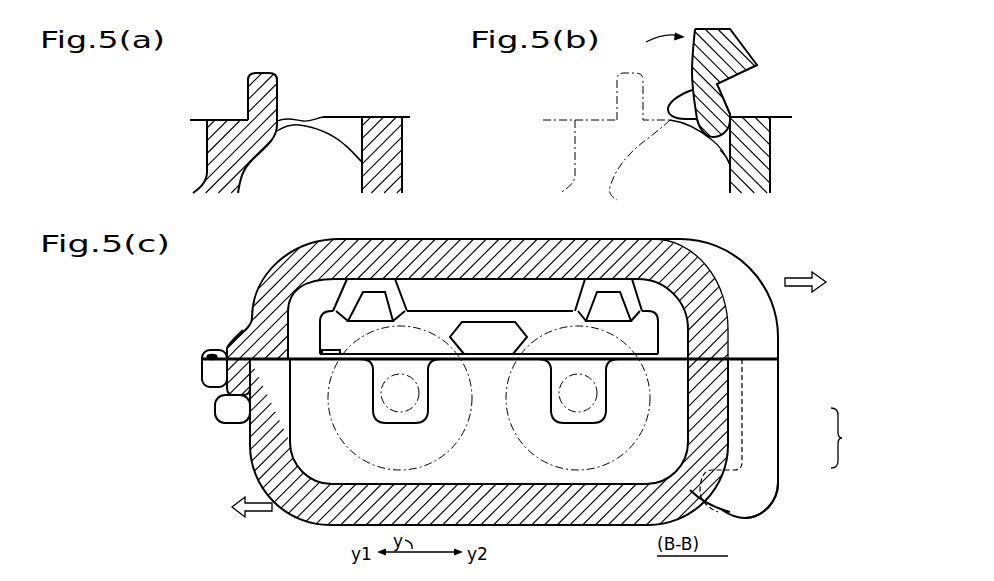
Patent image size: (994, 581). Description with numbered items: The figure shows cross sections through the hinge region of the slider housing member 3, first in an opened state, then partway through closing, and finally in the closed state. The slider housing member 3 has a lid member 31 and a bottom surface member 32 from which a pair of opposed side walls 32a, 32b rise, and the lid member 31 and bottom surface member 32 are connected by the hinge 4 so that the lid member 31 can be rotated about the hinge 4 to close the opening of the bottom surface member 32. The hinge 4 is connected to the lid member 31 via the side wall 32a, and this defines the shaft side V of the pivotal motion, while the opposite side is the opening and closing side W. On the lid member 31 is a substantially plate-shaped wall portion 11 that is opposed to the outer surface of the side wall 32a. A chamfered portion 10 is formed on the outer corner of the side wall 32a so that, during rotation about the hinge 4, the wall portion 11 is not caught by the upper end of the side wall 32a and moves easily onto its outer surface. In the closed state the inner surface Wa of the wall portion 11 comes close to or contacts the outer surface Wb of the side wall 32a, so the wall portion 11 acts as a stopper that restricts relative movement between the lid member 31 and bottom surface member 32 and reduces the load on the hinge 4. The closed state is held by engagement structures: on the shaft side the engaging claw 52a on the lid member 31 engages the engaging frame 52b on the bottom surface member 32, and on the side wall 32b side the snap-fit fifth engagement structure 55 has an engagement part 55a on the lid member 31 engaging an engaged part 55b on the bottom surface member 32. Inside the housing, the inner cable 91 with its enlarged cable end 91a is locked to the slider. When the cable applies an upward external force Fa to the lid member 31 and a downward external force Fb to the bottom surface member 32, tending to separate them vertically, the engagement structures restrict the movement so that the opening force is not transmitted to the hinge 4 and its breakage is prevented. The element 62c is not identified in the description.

In FIG. 5C, the slider housing member 3 is at (233, 272).
In FIG. 5A, the hinge 4 is at (297, 125).
In FIG. 5B, the hinge 4 is at (700, 142).
In FIG. 5C, the hinge 4 is at (206, 355).
In FIG. 5A, the chamfered portion 10 is at (362, 117).
In FIG. 5B, the chamfered portion 10 is at (733, 112).
In FIG. 5A, the wall portion 11 is at (268, 88).
In FIG. 5B, the wall portion 11 is at (697, 132).
In FIG. 5C, the wall portion 11 is at (238, 373).
In FIG. 5A, the lid member 31 is at (222, 180).
In FIG. 5B, the lid member 31 is at (608, 183).
In FIG. 5C, the lid member 31 is at (705, 292).
In FIG. 5C, the bottom surface member 32 is at (528, 508).
In FIG. 5A, the side wall 32a is at (385, 177).
In FIG. 5B, the side wall 32a is at (753, 177).
In FIG. 5C, the side wall 32a is at (283, 385).
In FIG. 5C, the side wall 32b is at (702, 385).
In FIG. 5C, the engaging claw 52a is at (233, 424).
In FIG. 5C, the engaging frame 52b is at (202, 372).
In FIG. 5C, the fifth engagement structure 55 is at (849, 438).
In FIG. 5C, the engagement part 55a is at (773, 470).
In FIG. 5C, the engaged part 55b is at (742, 427).
In FIG. 5C, the partition plate 62c is at (378, 383).
In FIG. 5C, the inner cable 91 is at (420, 391).
In FIG. 5C, the cable end 91a is at (443, 458).
In FIG. 5A, the inner surface Wa is at (248, 110).
In FIG. 5B, the inner surface Wa is at (727, 95).
In FIG. 5C, the inner surface Wa is at (252, 387).
In FIG. 5A, the outer surface Wb is at (343, 147).
In FIG. 5B, the outer surface Wb is at (727, 163).
In FIG. 5C, the outer surface Wb is at (247, 396).
In FIG. 5C, the opening and closing side W is at (790, 356).
In FIG. 5C, the shaft side V is at (201, 340).
In FIG. 5C, the upward external force Fa is at (803, 288).
In FIG. 5C, the downward external force Fb is at (262, 509).